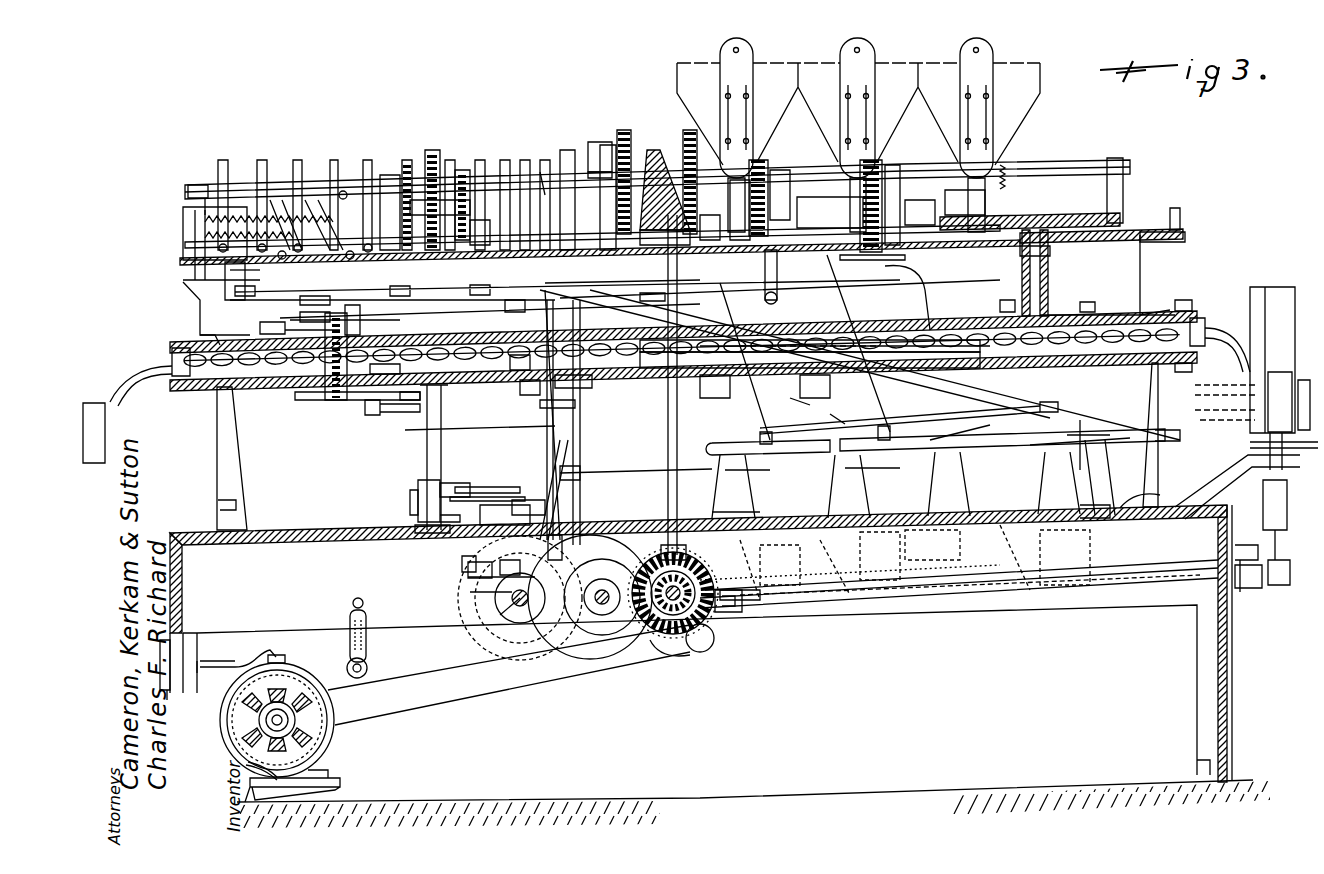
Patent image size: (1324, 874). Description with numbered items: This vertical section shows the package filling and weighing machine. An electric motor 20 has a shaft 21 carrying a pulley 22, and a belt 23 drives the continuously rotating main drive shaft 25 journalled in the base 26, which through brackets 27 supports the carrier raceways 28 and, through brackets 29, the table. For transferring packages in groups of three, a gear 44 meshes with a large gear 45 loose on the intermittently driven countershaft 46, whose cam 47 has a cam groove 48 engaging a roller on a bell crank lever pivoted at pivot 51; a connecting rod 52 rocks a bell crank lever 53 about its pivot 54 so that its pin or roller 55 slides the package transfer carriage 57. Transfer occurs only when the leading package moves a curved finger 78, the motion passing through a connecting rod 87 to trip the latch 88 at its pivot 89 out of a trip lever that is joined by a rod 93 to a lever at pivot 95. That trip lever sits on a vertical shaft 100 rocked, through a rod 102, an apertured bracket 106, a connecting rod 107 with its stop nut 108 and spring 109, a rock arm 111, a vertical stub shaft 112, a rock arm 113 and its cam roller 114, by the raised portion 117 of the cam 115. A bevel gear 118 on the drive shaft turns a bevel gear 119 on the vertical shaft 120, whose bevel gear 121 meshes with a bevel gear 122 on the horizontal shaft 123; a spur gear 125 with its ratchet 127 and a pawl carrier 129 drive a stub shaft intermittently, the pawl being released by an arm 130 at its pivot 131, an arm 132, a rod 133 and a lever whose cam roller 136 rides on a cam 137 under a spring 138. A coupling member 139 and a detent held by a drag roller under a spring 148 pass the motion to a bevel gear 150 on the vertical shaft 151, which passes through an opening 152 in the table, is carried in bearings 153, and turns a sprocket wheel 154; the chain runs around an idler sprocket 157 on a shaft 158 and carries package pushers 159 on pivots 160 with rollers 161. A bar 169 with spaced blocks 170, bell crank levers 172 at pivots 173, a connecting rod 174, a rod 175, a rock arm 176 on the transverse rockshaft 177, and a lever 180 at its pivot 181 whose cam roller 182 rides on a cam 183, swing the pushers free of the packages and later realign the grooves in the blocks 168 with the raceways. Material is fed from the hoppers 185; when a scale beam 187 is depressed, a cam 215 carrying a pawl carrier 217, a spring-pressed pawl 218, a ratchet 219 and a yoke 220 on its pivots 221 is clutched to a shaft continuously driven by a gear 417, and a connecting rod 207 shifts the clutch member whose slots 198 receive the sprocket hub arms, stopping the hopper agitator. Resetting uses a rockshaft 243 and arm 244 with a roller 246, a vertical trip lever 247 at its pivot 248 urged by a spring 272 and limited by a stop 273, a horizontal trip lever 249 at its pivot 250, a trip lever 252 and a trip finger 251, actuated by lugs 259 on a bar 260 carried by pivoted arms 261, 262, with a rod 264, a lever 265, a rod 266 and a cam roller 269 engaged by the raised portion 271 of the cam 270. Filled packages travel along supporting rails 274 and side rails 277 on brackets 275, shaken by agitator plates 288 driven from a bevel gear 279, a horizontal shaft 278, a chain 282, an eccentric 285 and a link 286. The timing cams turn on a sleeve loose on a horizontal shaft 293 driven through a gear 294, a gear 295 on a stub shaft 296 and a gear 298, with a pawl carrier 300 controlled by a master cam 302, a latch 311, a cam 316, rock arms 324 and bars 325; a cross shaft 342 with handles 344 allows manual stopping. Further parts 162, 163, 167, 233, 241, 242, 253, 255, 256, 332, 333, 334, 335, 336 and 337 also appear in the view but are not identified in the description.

The motor 20 is at (238, 722).
The motor shaft 21 is at (286, 720).
The electric cable 22 is at (285, 712).
The belt 23 is at (455, 683).
The bevel gear 25 is at (705, 625).
The frame 26 is at (335, 530).
The frame brace 27 is at (250, 500).
The rod 28 is at (628, 312).
The bracket 29 is at (205, 312).
The disc 44 is at (612, 582).
The cam 45 is at (462, 630).
The crank 46 is at (475, 606).
The crank pin 47 is at (478, 594).
The pulley 48 is at (600, 612).
The link 51 is at (570, 500).
The rod 52 is at (466, 478).
The bracket 53 is at (415, 492).
The block 54 is at (420, 482).
The rod 55 is at (465, 498).
The link 57 is at (452, 490).
The block 78 is at (470, 580).
The lever 87 is at (529, 505).
The link 88 is at (565, 518).
The pivot 89 is at (575, 522).
The block 93 is at (510, 560).
The block 95 is at (472, 556).
The rod 100 is at (570, 433).
The bracket 102 is at (535, 385).
The rod 106 is at (580, 282).
The rod 107 is at (310, 318).
The rod 108 is at (590, 287).
The clevis 109 is at (505, 310).
The plate 111 is at (225, 330).
The post 112 is at (218, 298).
The rod 113 is at (190, 254).
The spring 114 is at (205, 230).
The post 115 is at (222, 162).
The spring 117 is at (205, 218).
The bracket 118 is at (725, 621).
The housing 119 is at (866, 203).
The shaft 120 is at (667, 432).
The bevel gear 121 is at (740, 180).
The gear 122 is at (628, 150).
The guard 123 is at (643, 653).
The gear 125 is at (792, 179).
The gear 127 is at (772, 195).
The gear 129 is at (765, 180).
The lever 130 is at (778, 278).
The pivot 131 is at (778, 296).
The gear 132 is at (685, 135).
The block 133 is at (699, 230).
The lever 136 is at (312, 188).
The post 137 is at (302, 196).
The rod 138 is at (625, 298).
The gear 139 is at (880, 180).
The gear 148 is at (908, 191).
The table 150 is at (1055, 215).
The column 151 is at (1063, 296).
The bracket 152 is at (1052, 262).
The column 153 is at (1052, 283).
The bracket 154 is at (1112, 322).
The block 157 is at (412, 356).
The sprocket 158 is at (318, 400).
The conduit 159 is at (100, 460).
The conveyor rail 160 is at (172, 346).
The conveyor rail 161 is at (1197, 352).
The bearing 162 is at (1185, 312).
The arm 163 is at (275, 328).
The link 167 is at (375, 410).
The bar 168 is at (330, 410).
The chain 169 is at (810, 350).
The chain 170 is at (780, 348).
The hanger 172 is at (777, 386).
The link 173 is at (809, 407).
The link 174 is at (824, 424).
The block 175 is at (589, 386).
The housing 176 is at (195, 242).
The rod 177 is at (560, 352).
The arm 180 is at (254, 274).
The pivot 181 is at (272, 248).
The lever 182 is at (275, 188).
The post 183 is at (264, 196).
The hopper post 185 is at (773, 72).
The bracket 187 is at (838, 442).
The bar 198 is at (1075, 168).
The arm 207 is at (876, 267).
The guide 215 is at (511, 175).
The guide 217 is at (565, 187).
The block 218 is at (607, 156).
The plate 219 is at (607, 166).
The guide 220 is at (518, 181).
The rod 221 is at (505, 298).
The guide 233 is at (420, 160).
The rod 241 is at (818, 347).
The support 242 is at (949, 486).
The support 243 is at (950, 484).
The base 244 is at (1100, 510).
The slide 246 is at (780, 561).
The rod 247 is at (850, 575).
The link 248 is at (840, 566).
The bracket 249 is at (886, 599).
The link 250 is at (894, 560).
The slide 251 is at (951, 555).
The slide 252 is at (1069, 557).
The rod 253 is at (955, 435).
The bar 255 is at (760, 432).
The bar 256 is at (1084, 439).
The lever 259 is at (1075, 440).
The rod 260 is at (1095, 445).
The support 261 is at (1095, 470).
The support 262 is at (722, 486).
The rod 264 is at (645, 470).
The block 265 is at (577, 410).
The rod 266 is at (505, 308).
The pivot 269 is at (343, 175).
The post 270 is at (345, 186).
The post 271 is at (345, 165).
The slide 272 is at (932, 545).
The rod 273 is at (970, 579).
The rod 274 is at (1258, 442).
The rail 275 is at (1225, 475).
The bracket 277 is at (1245, 360).
The bar 278 is at (1140, 588).
The gear 279 is at (700, 648).
The bracket 282 is at (1248, 590).
The block 285 is at (1258, 596).
The housing 286 is at (1272, 536).
The plate 288 is at (1289, 406).
The arm 293 is at (920, 300).
The gear 294 is at (457, 188).
The gear 295 is at (457, 193).
The gear 296 is at (440, 188).
The gear 298 is at (471, 206).
The post 300 is at (395, 160).
The gear 302 is at (392, 165).
The pivot 311 is at (331, 248).
The brace 316 is at (1140, 230).
The block 324 is at (1040, 215).
The spring 325 is at (1016, 180).
The rod 332 is at (501, 583).
The cam 333 is at (487, 611).
The block 334 is at (487, 515).
The rod 335 is at (420, 432).
The block 336 is at (520, 358).
The block 337 is at (457, 512).
The bracket 342 is at (1180, 214).
The rod 344 is at (1175, 210).
The guide 417 is at (618, 140).